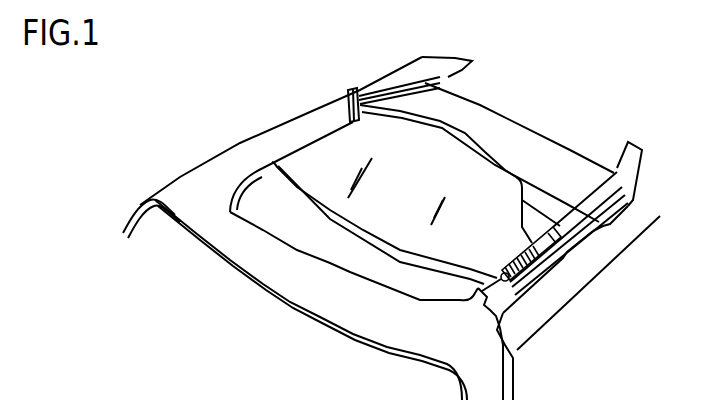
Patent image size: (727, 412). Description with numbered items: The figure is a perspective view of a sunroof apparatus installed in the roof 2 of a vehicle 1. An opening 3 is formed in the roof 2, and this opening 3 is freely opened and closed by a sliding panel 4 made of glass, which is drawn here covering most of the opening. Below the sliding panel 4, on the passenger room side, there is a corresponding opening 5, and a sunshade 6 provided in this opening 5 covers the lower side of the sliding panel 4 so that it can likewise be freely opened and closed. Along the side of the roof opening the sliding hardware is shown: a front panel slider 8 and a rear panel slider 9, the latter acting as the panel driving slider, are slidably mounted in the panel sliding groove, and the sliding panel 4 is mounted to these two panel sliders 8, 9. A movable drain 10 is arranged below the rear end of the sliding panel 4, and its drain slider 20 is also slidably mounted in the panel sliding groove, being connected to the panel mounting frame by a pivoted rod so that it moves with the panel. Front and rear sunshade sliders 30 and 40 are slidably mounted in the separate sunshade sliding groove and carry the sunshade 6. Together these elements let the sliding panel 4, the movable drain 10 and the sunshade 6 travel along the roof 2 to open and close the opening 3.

The vehicle 1 is at (131, 205).
The roof 2 is at (173, 193).
The opening 3 is at (262, 198).
The sliding panel 4 is at (317, 160).
The opening 5 is at (371, 271).
The sunshade 6 is at (510, 133).
The front panel slider 8 is at (527, 290).
The rear panel slider 9 is at (554, 256).
The movable drain 10 is at (537, 198).
The drain slider 20 is at (593, 245).
The front sunshade slider 30 is at (572, 258).
The rear sunshade slider 40 is at (632, 200).